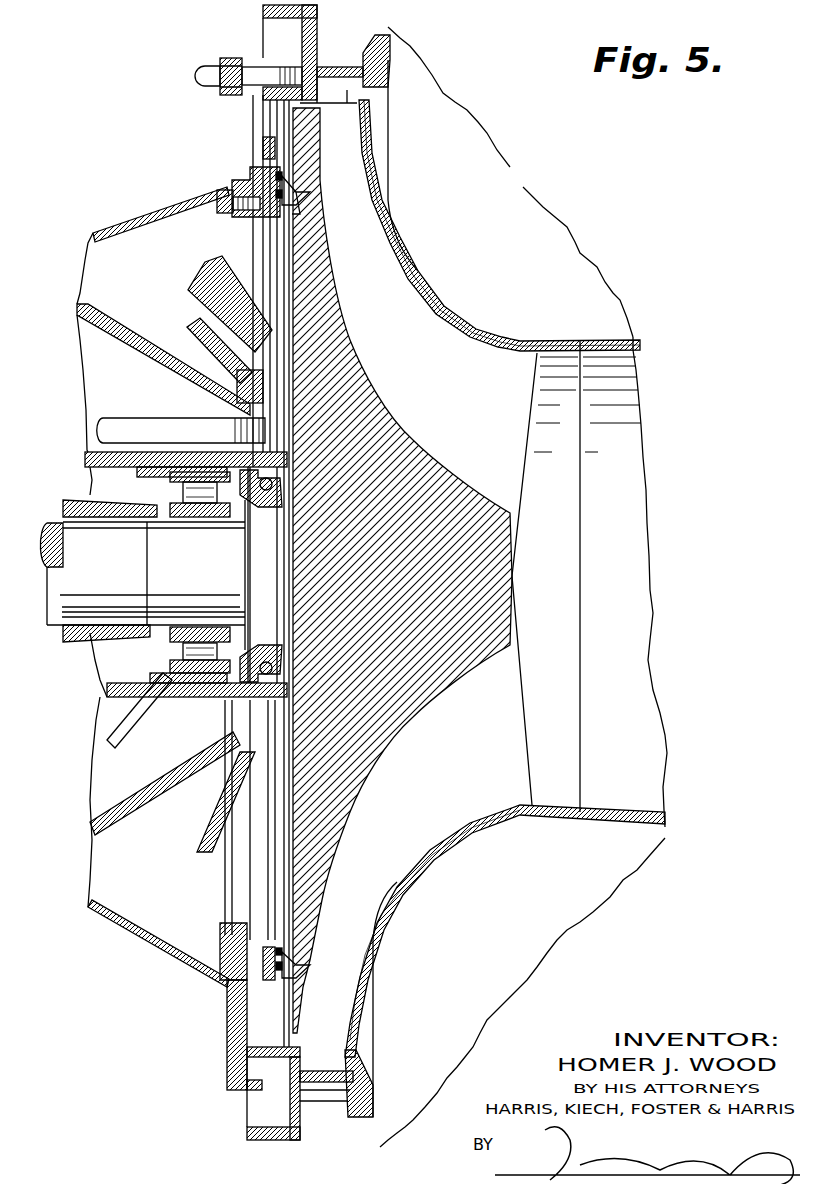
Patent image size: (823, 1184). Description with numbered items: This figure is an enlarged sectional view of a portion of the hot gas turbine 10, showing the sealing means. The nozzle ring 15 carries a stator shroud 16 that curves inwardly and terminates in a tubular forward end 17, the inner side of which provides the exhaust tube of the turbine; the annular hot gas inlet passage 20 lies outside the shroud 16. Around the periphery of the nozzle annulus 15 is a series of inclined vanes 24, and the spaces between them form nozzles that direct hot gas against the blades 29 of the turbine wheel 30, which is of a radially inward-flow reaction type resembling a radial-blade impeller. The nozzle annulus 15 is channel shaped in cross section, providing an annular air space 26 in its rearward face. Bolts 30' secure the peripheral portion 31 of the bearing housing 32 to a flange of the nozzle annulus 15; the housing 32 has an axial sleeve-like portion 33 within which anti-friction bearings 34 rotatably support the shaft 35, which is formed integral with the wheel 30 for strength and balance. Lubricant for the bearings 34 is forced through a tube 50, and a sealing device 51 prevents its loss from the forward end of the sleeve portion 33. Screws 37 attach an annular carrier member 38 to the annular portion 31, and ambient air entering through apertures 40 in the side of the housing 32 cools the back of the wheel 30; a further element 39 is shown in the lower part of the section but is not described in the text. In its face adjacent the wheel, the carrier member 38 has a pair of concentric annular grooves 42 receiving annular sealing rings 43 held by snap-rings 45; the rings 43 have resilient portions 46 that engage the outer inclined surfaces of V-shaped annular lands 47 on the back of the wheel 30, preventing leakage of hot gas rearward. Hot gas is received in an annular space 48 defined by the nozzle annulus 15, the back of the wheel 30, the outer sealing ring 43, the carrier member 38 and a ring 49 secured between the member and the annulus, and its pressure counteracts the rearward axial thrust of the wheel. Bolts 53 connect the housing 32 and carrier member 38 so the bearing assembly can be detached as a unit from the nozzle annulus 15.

The hot gas turbine 10 is at (556, 166).
The nozzle ring 15 is at (318, 40).
The stator shroud 16 is at (440, 295).
The tubular forward end 17 is at (583, 338).
The annular hot gas inlet passage 20 is at (626, 297).
The inclined vanes 24 is at (362, 62).
The annular air space 26 is at (273, 43).
The blades 29 is at (502, 486).
The turbine wheel 30 is at (417, 573).
The bolts 30' is at (187, 85).
The peripheral portion 31 is at (240, 56).
The bearing housing 32 is at (135, 240).
The axial sleeve-like portion 33 is at (130, 455).
The anti-friction bearings 34 is at (293, 437).
The shaft 35 is at (93, 613).
The screws 37 is at (225, 215).
The annular carrier member 38 is at (265, 166).
The lower seal block 39 is at (262, 925).
The apertures 40 is at (165, 215).
The concentric annular grooves 42 is at (276, 180).
The annular sealing rings 43 is at (296, 198).
The snap-rings 45 is at (282, 176).
The resilient portions 46 is at (283, 963).
The V-shaped annular lands 47 is at (300, 214).
The annular space 48 is at (275, 113).
The ring 49 is at (270, 127).
The tube 50 is at (135, 725).
The sealing device 51 is at (248, 505).
The bolts 53 is at (113, 425).